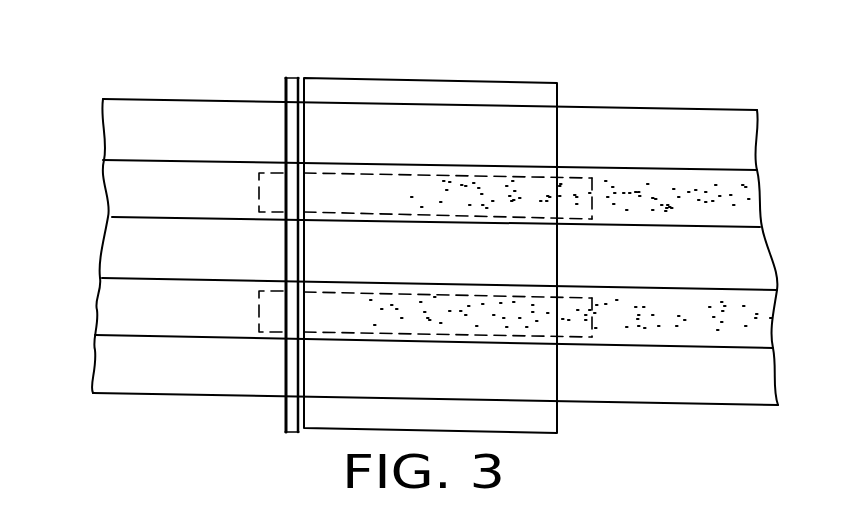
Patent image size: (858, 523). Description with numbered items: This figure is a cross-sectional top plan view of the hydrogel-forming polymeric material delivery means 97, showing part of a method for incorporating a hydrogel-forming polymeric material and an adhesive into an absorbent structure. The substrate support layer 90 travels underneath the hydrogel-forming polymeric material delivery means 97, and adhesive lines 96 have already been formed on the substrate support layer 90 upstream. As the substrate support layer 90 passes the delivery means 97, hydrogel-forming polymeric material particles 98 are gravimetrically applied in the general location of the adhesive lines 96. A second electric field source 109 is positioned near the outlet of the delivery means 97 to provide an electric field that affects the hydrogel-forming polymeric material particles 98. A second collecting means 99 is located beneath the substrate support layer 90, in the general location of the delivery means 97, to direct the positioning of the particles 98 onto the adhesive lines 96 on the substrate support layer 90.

The substrate support layer 90 is at (738, 140).
The adhesive lines 96 is at (120, 190).
The hydrogel-forming polymeric material delivery means 97 is at (544, 82).
The hydrogel-forming polymeric material particles 98 is at (695, 187).
The second collecting means 99 is at (273, 172).
The second electric field source 109 is at (287, 88).